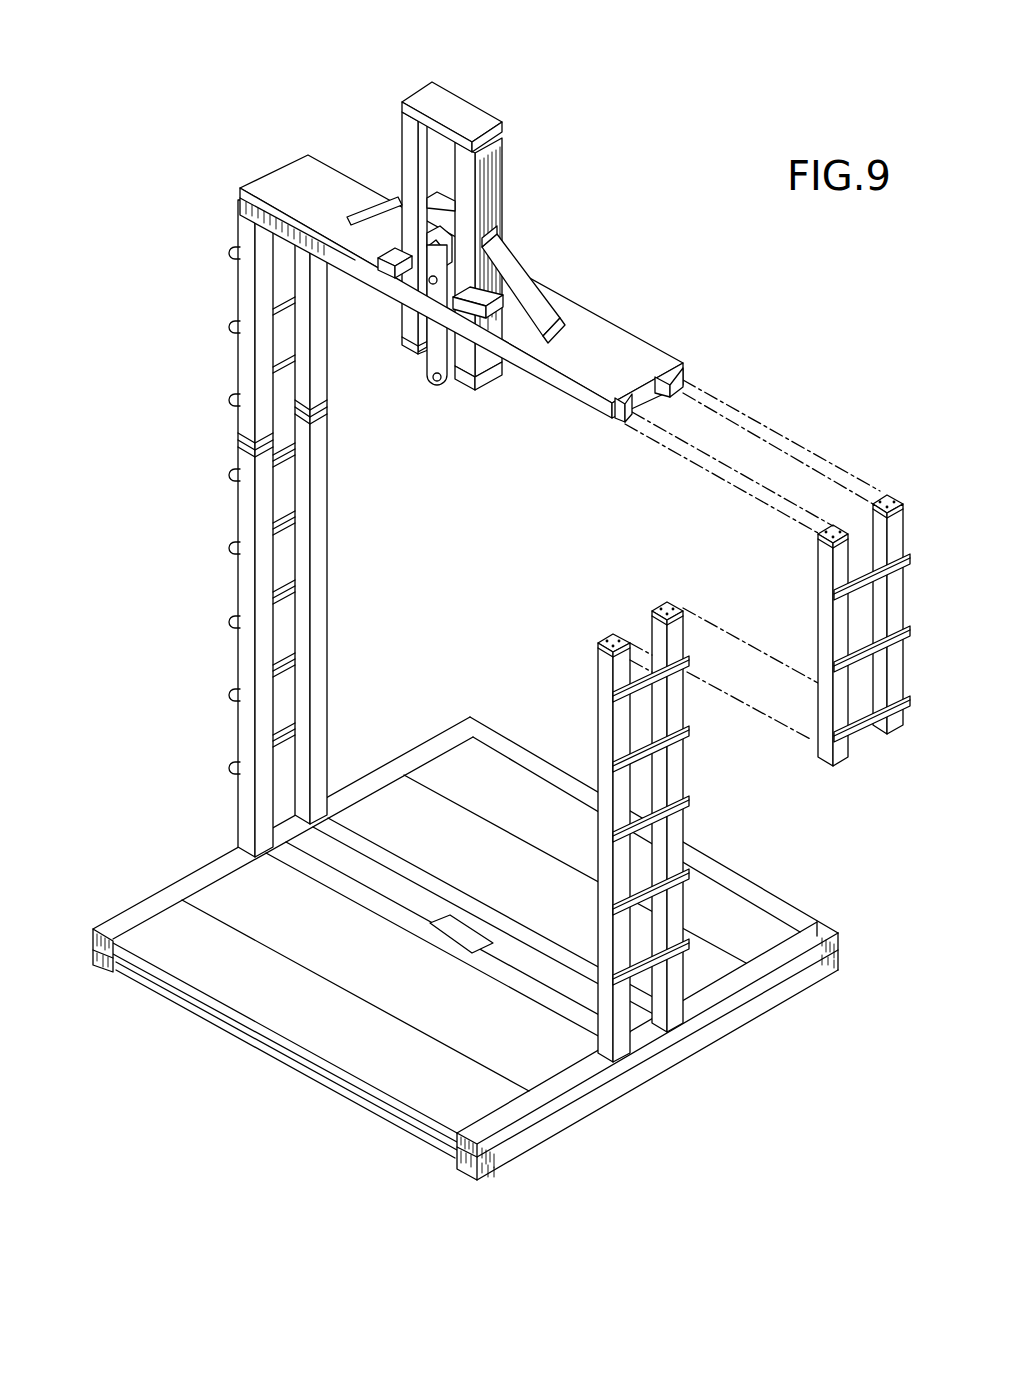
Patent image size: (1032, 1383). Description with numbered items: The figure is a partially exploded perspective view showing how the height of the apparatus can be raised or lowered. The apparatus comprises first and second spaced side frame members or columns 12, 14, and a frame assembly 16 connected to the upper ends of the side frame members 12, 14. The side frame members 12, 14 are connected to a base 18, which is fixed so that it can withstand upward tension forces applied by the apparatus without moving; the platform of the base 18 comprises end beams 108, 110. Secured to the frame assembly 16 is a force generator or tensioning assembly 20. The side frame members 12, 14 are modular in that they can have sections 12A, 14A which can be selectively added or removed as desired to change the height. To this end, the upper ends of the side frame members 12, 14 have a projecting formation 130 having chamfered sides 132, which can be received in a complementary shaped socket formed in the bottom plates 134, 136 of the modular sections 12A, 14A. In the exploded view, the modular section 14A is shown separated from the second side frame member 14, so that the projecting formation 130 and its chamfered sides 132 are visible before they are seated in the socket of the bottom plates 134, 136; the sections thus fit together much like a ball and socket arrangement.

The first side frame member 12 is at (205, 520).
The modular section 12A is at (252, 300).
The second side frame member 14 is at (722, 846).
The modular section 14A is at (884, 520).
The frame assembly 16 is at (640, 278).
The base 18 is at (155, 866).
The tensioning assembly 20 is at (500, 83).
The end beam 108 is at (458, 1172).
The end beam 110 is at (92, 970).
The projecting formation 130 is at (603, 638).
The chamfered sides 132 is at (671, 600).
The bottom plate 134 is at (833, 768).
The bottom plate 136 is at (893, 742).